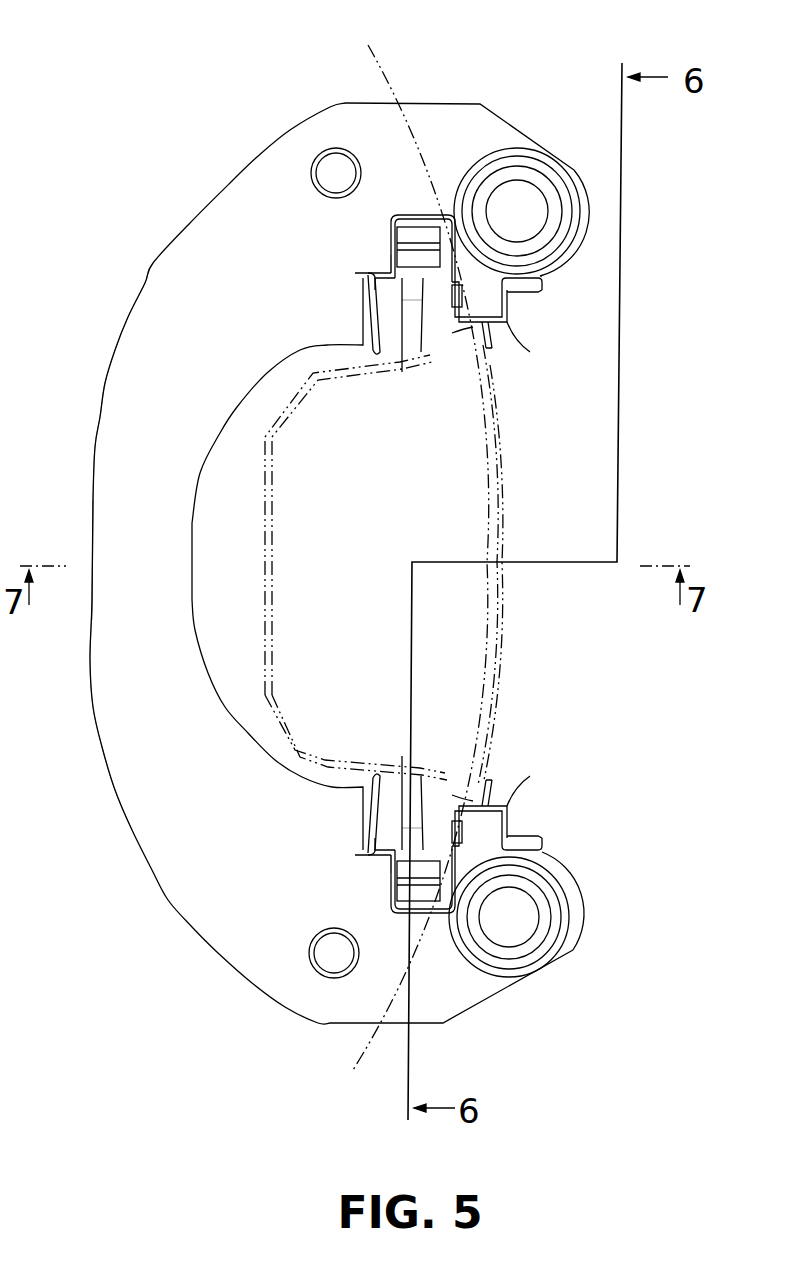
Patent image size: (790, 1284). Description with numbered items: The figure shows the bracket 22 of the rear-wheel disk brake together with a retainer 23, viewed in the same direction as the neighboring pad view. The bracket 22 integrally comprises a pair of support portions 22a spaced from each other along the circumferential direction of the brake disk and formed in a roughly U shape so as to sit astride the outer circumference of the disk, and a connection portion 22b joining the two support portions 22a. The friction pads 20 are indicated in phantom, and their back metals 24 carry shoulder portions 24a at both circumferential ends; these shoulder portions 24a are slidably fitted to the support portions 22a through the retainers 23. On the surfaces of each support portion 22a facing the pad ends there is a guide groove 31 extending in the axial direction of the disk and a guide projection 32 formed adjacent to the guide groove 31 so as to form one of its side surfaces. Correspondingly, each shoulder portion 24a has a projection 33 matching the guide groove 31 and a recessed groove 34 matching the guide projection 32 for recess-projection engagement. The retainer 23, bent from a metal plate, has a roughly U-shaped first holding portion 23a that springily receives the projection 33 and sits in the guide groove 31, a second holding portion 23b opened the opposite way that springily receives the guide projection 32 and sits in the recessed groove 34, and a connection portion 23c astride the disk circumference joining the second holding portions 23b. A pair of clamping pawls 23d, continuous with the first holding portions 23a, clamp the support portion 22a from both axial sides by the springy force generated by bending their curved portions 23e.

The friction pad 20 is at (250, 594).
The bracket 22 is at (163, 903).
The support portion 22a is at (438, 112).
The connection portion 22b is at (100, 658).
The retainer 23 is at (362, 323).
The first holding portion 23a is at (368, 276).
The second holding portion 23b is at (507, 312).
The connection portion 23c is at (520, 294).
The clamping pawl 23d is at (420, 230).
The curved portion 23e is at (417, 313).
The back metal 24 is at (265, 556).
The shoulder portion 24a is at (498, 348).
The guide groove 31 is at (372, 295).
The guide projection 32 is at (497, 345).
The projection 33 is at (392, 248).
The recessed groove 34 is at (443, 327).